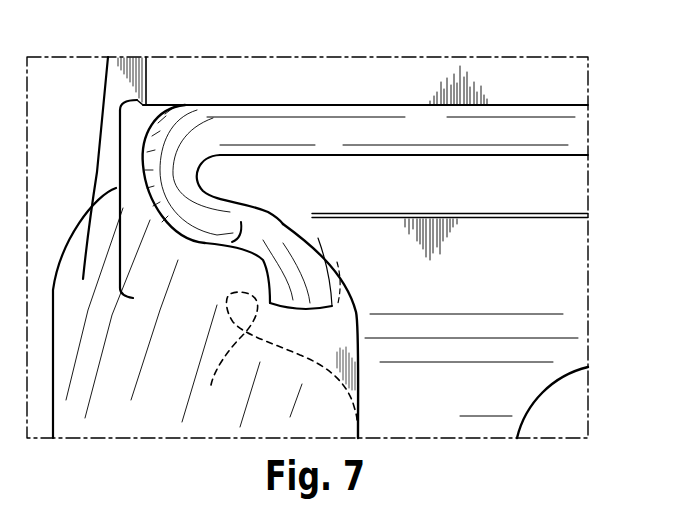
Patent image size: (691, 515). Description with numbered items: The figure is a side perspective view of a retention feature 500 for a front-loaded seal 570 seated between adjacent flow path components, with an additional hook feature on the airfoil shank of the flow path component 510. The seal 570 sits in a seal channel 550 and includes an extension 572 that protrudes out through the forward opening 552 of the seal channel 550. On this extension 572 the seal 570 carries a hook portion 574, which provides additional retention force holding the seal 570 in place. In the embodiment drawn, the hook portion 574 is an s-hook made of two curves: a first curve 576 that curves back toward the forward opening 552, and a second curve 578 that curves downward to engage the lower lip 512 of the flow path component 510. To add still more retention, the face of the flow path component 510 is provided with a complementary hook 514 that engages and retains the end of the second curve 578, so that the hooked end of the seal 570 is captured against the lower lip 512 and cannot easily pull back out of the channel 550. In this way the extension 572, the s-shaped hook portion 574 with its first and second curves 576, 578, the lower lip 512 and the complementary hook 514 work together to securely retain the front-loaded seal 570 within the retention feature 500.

The retention feature 500 is at (86, 49).
The flow path component 510 is at (395, 78).
The lower lip 512 is at (307, 232).
The complementary hook 514 is at (213, 378).
The seal channel 550 is at (597, 104).
The forward opening 552 is at (152, 110).
The front-loaded seal 570 is at (557, 107).
The extension 572 is at (202, 113).
The hook portion 574 is at (118, 187).
The first curve 576 is at (207, 192).
The second curve 578 is at (224, 245).